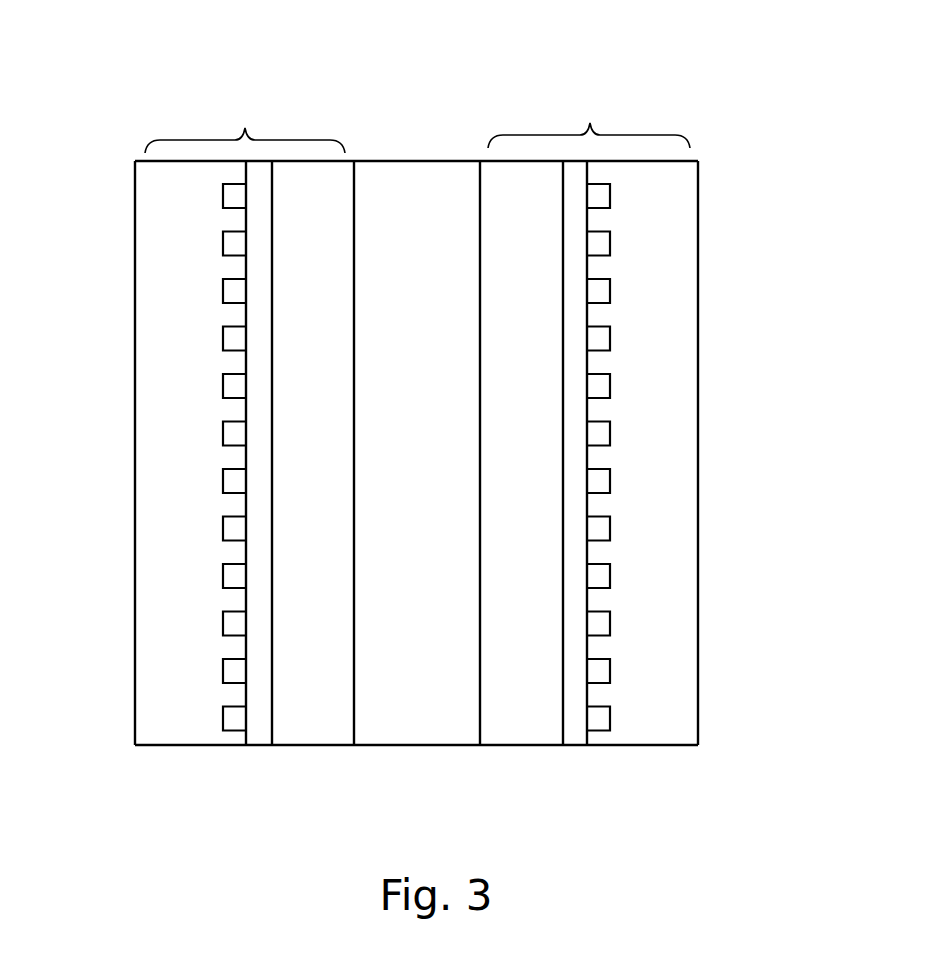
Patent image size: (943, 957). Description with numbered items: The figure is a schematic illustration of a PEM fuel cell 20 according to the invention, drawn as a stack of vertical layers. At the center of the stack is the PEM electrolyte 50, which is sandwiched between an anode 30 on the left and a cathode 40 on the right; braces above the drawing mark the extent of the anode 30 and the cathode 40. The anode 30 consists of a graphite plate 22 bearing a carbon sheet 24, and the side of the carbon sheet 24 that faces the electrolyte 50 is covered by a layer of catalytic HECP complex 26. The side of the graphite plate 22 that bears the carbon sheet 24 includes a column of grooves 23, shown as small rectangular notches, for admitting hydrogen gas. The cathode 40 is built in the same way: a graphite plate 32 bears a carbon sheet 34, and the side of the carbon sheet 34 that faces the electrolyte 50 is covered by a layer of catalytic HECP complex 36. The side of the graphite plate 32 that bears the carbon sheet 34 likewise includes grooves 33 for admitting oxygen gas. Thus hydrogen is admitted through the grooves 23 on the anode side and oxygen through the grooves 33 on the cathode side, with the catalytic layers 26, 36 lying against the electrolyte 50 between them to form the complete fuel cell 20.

The PEM fuel cell 20 is at (727, 91).
The graphite plate 22 is at (171, 690).
The grooves 23 is at (223, 292).
The carbon sheet 24 is at (259, 738).
The layer of catalytic HECP complex 26 is at (294, 490).
The anode 30 is at (245, 124).
The graphite plate 32 is at (636, 658).
The grooves 33 is at (610, 385).
The carbon sheet 34 is at (574, 736).
The layer of catalytic HECP complex 36 is at (506, 490).
The cathode 40 is at (589, 119).
The PEM electrolyte 50 is at (406, 410).